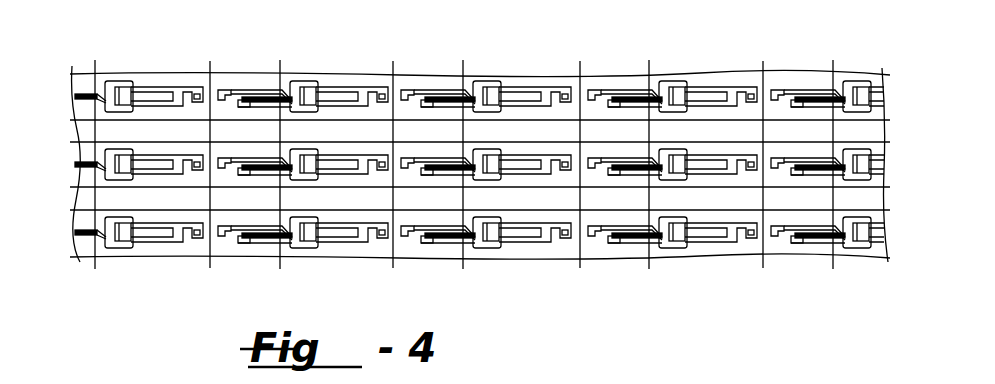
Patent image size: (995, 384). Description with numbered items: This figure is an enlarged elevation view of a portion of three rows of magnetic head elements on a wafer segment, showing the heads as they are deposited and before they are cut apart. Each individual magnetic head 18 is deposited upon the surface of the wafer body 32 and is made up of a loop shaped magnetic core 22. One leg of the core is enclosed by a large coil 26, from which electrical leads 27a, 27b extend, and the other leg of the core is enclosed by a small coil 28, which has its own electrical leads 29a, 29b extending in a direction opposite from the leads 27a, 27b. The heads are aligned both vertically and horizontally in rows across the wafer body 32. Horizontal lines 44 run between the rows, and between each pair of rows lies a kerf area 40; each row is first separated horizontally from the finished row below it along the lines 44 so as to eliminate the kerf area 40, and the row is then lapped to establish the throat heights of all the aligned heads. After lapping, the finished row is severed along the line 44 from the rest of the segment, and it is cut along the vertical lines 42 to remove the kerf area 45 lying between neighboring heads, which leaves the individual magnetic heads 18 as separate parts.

The magnetic head 18 is at (124, 76).
The loop shaped magnetic core 22 is at (301, 76).
The large coil 26 is at (330, 78).
The small coil 28 is at (290, 100).
The wafer body 32 is at (423, 83).
The kerf area 40 is at (707, 132).
The cutting line 42 is at (580, 120).
The separation line 44 is at (784, 140).
The kerf area 45 is at (222, 150).
The electrical lead 27a is at (363, 240).
The electrical lead 27b is at (380, 237).
The electrical lead 29a is at (241, 244).
The electrical lead 29b is at (224, 236).